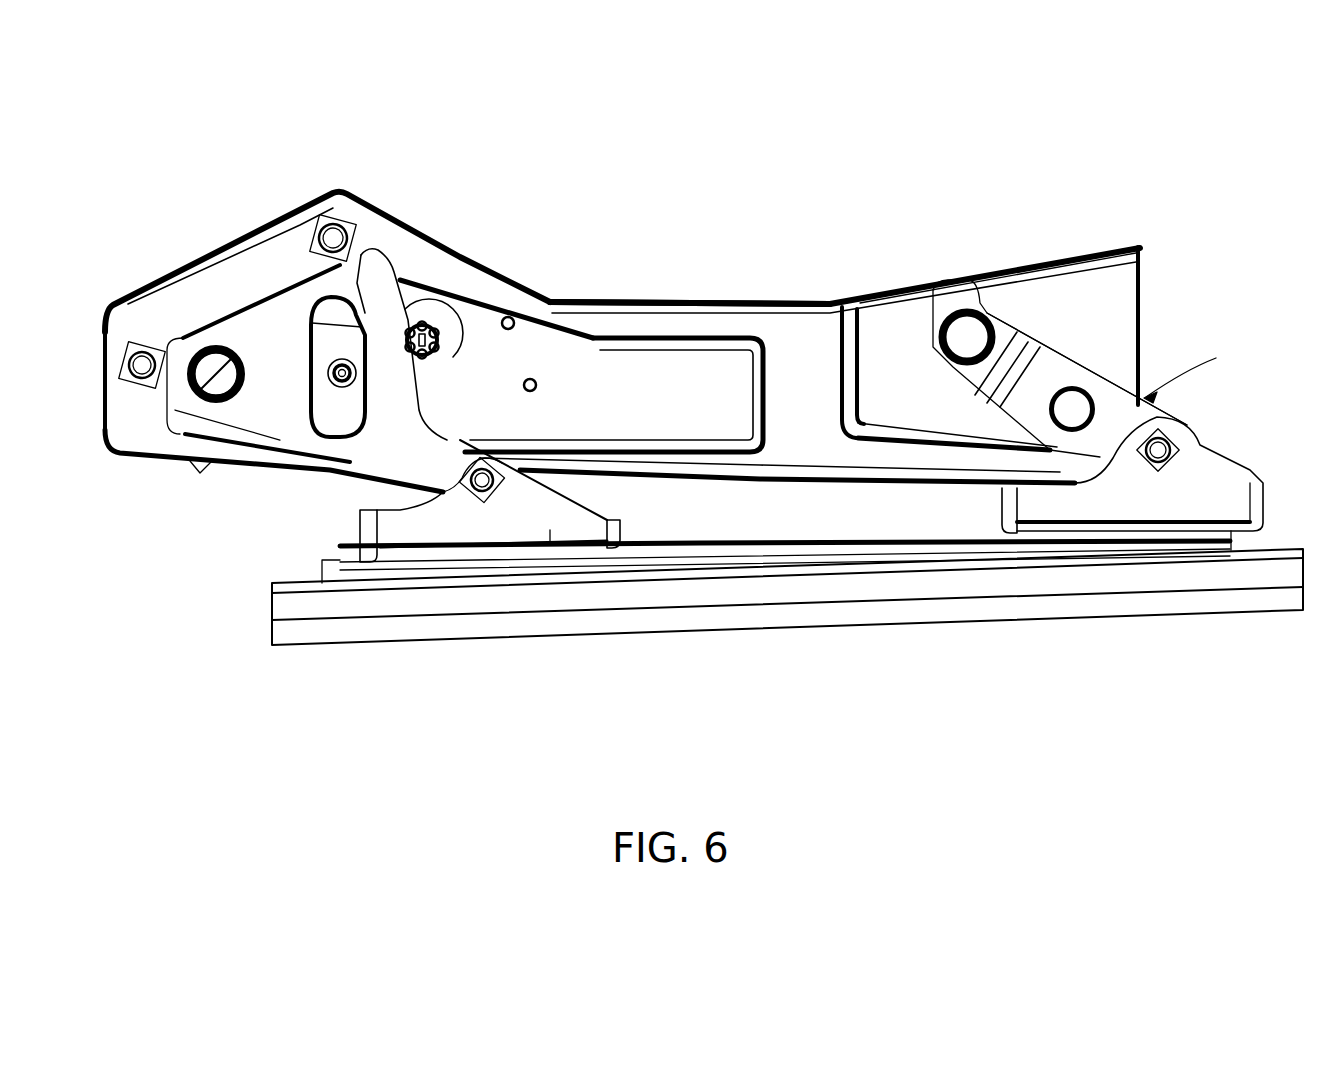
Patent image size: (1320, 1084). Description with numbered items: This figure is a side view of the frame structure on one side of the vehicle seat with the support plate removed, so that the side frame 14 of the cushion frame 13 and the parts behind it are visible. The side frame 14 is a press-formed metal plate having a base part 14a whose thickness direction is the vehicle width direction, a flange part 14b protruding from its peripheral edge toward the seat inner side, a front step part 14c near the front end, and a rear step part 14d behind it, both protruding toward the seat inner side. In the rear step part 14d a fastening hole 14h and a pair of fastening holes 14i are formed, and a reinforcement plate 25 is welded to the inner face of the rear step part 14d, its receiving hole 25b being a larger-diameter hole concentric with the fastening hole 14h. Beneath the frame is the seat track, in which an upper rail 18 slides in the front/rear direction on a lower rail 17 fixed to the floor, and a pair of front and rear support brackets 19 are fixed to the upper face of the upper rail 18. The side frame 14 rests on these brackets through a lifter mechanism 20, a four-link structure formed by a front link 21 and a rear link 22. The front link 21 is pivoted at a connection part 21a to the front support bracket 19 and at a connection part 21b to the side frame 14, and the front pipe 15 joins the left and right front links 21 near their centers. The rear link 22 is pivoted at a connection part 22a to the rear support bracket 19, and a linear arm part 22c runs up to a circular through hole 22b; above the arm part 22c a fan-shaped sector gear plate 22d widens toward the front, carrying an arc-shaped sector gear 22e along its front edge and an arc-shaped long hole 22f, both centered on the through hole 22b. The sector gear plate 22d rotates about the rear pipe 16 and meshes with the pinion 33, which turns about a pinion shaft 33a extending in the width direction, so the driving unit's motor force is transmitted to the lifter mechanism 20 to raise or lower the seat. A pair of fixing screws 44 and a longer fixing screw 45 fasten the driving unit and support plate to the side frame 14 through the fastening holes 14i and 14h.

The cushion frame 13 is at (877, 275).
The side frame 14 is at (1118, 241).
The base part 14a is at (803, 343).
The flange part 14b is at (628, 300).
The front step part 14c is at (897, 313).
The rear step part 14d is at (693, 366).
The fastening hole 14h is at (356, 373).
The fastening holes 14i is at (510, 323).
The front pipe 15 is at (1085, 388).
The rear pipe 16 is at (212, 405).
The lower rail 17 is at (1248, 600).
The upper rail 18 is at (887, 560).
The support bracket 19 is at (1217, 477).
The lifter mechanism 20 is at (343, 477).
The front link 21 is at (1048, 367).
The connection part 21a is at (1162, 445).
The connection part 21b is at (970, 330).
The rear link 22 is at (289, 305).
The connection part 22a is at (476, 487).
The through hole 22b is at (200, 362).
The arm part 22c is at (380, 467).
The sector gear plate 22d is at (366, 300).
The sector gear 22e is at (403, 310).
The long hole 22f is at (327, 306).
The reinforcement plate 25 is at (313, 337).
The receiving hole 25b is at (333, 388).
The pinion 33 is at (447, 330).
The pinion shaft 33a is at (432, 341).
The fixing screws 44 is at (616, 359).
The fixing screw 45 is at (433, 394).